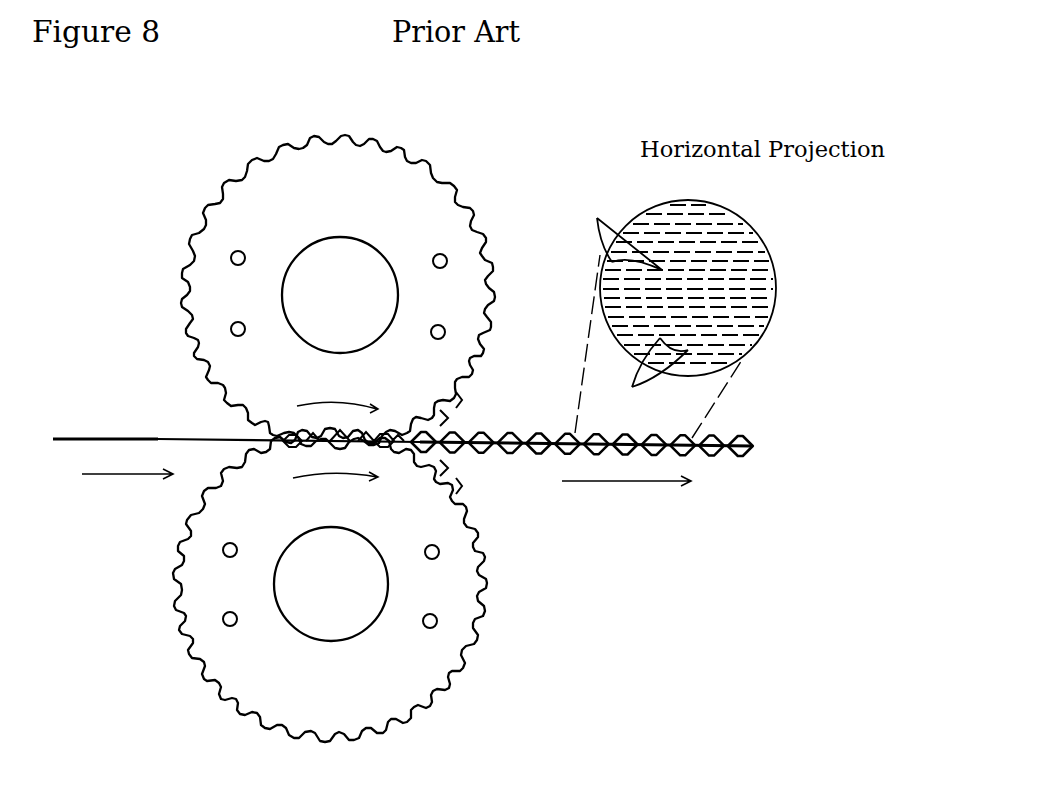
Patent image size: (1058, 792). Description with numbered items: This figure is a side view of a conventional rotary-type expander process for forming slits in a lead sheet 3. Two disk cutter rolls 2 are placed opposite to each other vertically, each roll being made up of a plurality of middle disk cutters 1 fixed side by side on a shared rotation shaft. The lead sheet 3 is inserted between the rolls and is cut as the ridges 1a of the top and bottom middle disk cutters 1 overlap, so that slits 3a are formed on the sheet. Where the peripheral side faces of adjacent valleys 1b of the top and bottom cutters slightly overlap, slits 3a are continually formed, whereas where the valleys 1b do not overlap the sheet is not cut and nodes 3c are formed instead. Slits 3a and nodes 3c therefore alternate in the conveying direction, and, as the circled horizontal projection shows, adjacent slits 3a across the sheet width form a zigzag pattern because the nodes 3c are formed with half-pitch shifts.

The middle disk cutter 1 is at (466, 284).
The ridge 1a is at (438, 410).
The valley 1b is at (450, 393).
The disk cutter roll 2 is at (180, 223).
The lead sheet 3 is at (156, 439).
The slit 3a is at (582, 397).
The node 3c is at (620, 226).